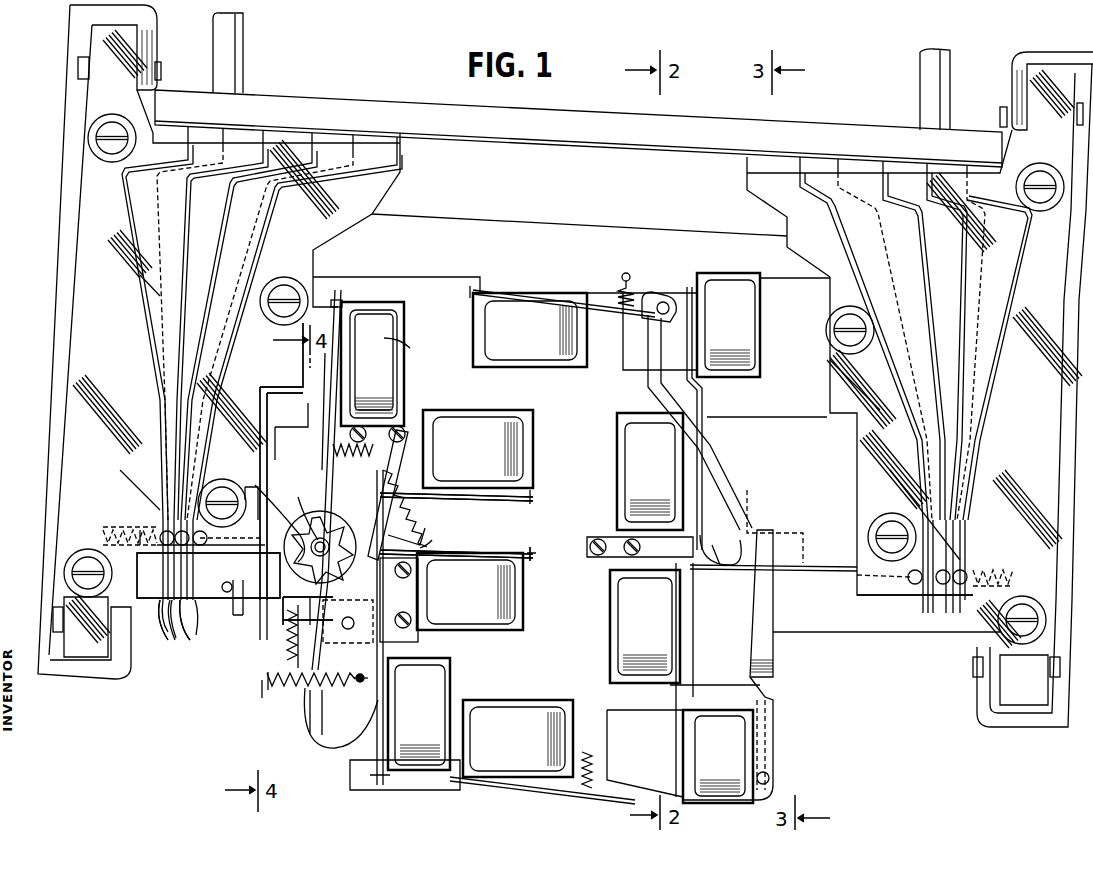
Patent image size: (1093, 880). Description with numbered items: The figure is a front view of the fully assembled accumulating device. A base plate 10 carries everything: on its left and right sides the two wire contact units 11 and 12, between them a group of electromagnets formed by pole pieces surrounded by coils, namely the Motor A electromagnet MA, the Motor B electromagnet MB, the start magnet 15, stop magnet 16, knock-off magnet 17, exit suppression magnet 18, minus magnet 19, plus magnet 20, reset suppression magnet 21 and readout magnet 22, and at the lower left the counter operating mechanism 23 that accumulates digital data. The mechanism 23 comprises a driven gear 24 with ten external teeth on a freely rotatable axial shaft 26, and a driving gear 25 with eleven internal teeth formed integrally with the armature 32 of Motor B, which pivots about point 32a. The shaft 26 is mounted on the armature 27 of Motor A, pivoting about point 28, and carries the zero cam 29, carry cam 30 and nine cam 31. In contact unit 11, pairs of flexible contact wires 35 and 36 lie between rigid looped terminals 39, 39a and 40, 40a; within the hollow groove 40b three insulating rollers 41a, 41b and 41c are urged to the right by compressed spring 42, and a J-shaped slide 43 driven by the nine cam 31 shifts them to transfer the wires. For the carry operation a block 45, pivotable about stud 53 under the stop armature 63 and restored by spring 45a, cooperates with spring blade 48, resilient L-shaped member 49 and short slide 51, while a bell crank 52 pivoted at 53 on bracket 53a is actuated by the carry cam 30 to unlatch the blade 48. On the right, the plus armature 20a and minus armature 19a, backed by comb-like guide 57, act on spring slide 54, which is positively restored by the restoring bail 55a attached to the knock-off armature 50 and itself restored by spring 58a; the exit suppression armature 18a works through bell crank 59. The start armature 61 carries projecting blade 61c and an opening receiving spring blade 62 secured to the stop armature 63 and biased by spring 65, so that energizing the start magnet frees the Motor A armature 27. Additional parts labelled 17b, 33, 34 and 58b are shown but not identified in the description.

The base plate 10 is at (577, 198).
The wire contact unit 11 is at (114, 372).
The wire contact unit 12 is at (1039, 473).
The start magnet 15 is at (515, 420).
The stop magnet 16 is at (445, 684).
The knock-off magnet 17 is at (540, 305).
The knock-off link bar 17b is at (562, 301).
The exit suppression magnet 18 is at (540, 712).
The exit suppression armature 18a is at (530, 792).
The minus magnet 19 is at (734, 282).
The minus armature 19a is at (705, 408).
The plus magnet 20 is at (630, 488).
The plus armature 20a is at (700, 495).
The reset suppression magnet 21 is at (628, 597).
The readout magnet 22 is at (760, 757).
The counter operating mechanism 23 is at (325, 520).
The driven gear 24 is at (299, 498).
The driving gear 25 is at (247, 488).
The axial shaft 26 is at (292, 645).
The armature of Motor A 27 is at (310, 417).
The pivot point 28 is at (335, 300).
The zero cam 29 is at (308, 605).
The carry cam 30 is at (430, 530).
The nine cam 31 is at (290, 510).
The armature of Motor B 32 is at (485, 550).
The pivot point 32a is at (532, 548).
The pawl arm 33 is at (402, 430).
The spring 34 is at (353, 466).
The flexible contact wires 35 is at (152, 620).
The flexible contact wires 36 is at (193, 620).
The looped terminal 39 is at (208, 575).
The looped terminal 39a is at (165, 627).
The looped terminal 40 is at (184, 622).
The looped terminal 40a is at (233, 610).
The hollow groove 40b is at (135, 528).
The insulating roller 41a is at (165, 530).
The insulating roller 41b is at (190, 546).
The insulating roller 41c is at (208, 546).
The compression spring 42 is at (110, 527).
The J-shaped slide 43 is at (312, 545).
The block 45 is at (267, 682).
The spring 45a is at (262, 676).
The spring blade 48 is at (285, 640).
The resilient L-shaped member 49 is at (278, 388).
The armature of knock-off magnet 50 is at (620, 312).
The short slide 51 is at (236, 546).
The bell crank 52 is at (375, 585).
The stud 53 is at (340, 645).
The bracket 53a is at (367, 668).
The spring slide 54 is at (748, 565).
The restoring bail 55a is at (705, 460).
The comb-like guide 57 is at (710, 515).
The spring 58a is at (632, 285).
The spring 58b is at (582, 790).
The bell crank 59 is at (772, 656).
The armature of start magnet 61 is at (495, 500).
The projecting blade 61c is at (406, 508).
The spring blade 62 is at (430, 547).
The armature of stop magnet 63 is at (385, 648).
The spring 65 is at (341, 718).
The Motor A MA is at (405, 364).
The Motor B MB is at (470, 591).